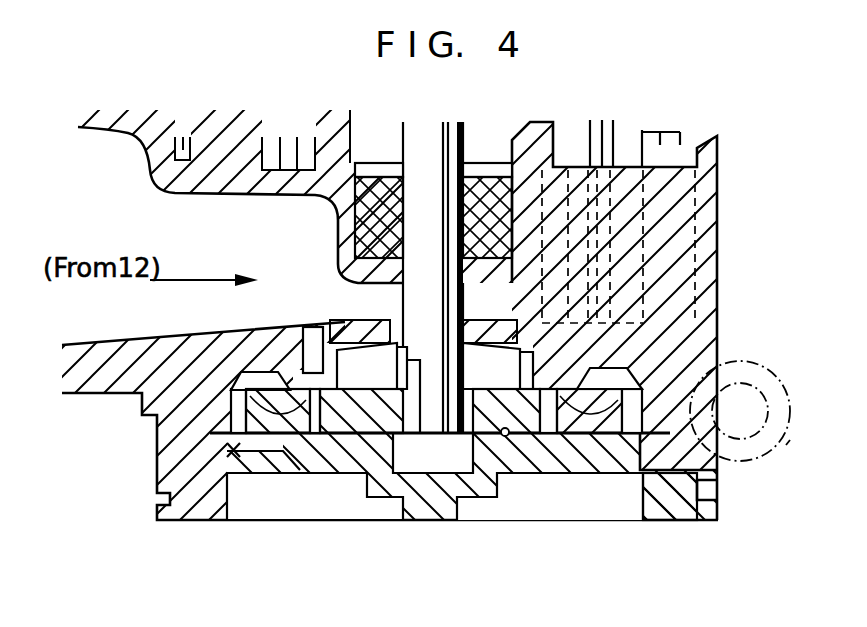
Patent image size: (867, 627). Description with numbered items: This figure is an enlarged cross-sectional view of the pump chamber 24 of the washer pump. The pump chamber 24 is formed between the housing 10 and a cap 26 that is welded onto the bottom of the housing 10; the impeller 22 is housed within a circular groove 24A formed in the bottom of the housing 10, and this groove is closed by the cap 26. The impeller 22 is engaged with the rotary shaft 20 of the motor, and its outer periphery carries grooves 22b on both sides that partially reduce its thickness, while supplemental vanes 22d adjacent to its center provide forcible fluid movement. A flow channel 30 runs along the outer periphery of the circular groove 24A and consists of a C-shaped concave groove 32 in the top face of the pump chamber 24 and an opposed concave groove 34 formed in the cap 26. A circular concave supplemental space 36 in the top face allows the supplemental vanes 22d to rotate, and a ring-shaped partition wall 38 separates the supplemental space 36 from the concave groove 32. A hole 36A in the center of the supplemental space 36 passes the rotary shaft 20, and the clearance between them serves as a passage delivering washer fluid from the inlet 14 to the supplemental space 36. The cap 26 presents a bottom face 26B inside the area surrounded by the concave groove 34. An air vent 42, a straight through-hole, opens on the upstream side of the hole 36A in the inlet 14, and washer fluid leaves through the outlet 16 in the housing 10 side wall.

The housing 10 is at (718, 183).
The inlet 14 is at (217, 210).
The outlet 16 is at (787, 447).
The rotary shaft 20 is at (463, 152).
The impeller 22 is at (645, 354).
The grooves 22b is at (606, 445).
The supplemental vanes 22d is at (375, 435).
The pump chamber 24 is at (636, 405).
The circular groove 24A is at (230, 406).
The cap 26 is at (547, 440).
The bottom face 26B is at (513, 452).
The flow channel 30 is at (233, 452).
The concave groove 32 is at (250, 377).
The concave groove 34 is at (625, 448).
The supplemental space 36 is at (343, 470).
The hole 36A is at (387, 334).
The partition wall 38 is at (582, 440).
The air vent 42 is at (309, 328).